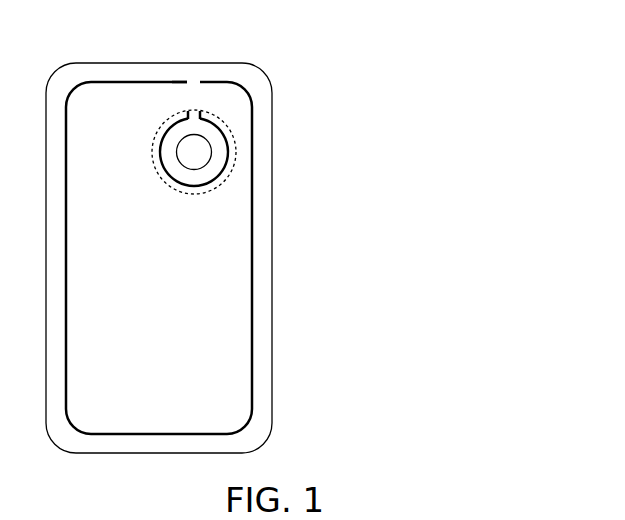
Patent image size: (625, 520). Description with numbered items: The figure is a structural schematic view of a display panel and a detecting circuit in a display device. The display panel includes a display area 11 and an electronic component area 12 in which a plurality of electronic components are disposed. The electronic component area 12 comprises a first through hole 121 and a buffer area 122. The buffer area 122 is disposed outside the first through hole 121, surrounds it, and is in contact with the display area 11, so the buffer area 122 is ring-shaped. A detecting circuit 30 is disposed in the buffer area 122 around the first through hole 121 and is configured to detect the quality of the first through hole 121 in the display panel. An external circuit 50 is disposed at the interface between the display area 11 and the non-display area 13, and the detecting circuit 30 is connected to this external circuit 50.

The non-display area 13 is at (72, 80).
The display area 11 is at (110, 110).
The external circuit 50 is at (172, 82).
The detecting circuit 30 is at (213, 120).
The electronic component area 12 is at (292, 256).
The first through hole 121 is at (211, 152).
The buffer area 122 is at (207, 172).